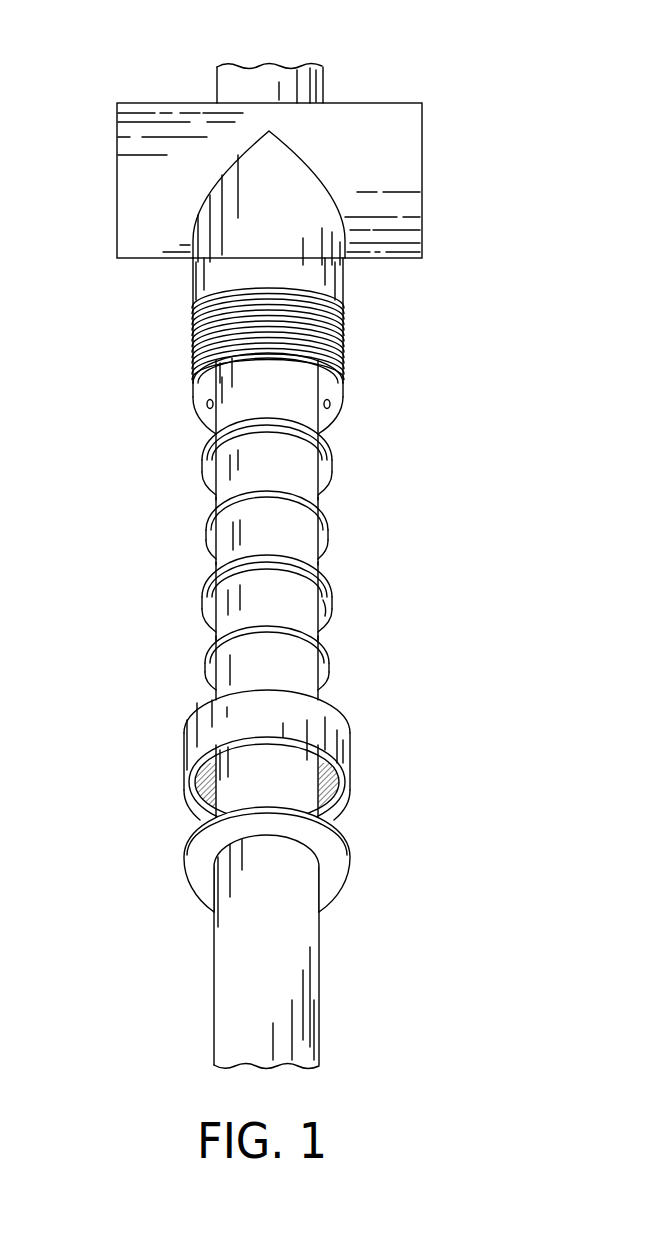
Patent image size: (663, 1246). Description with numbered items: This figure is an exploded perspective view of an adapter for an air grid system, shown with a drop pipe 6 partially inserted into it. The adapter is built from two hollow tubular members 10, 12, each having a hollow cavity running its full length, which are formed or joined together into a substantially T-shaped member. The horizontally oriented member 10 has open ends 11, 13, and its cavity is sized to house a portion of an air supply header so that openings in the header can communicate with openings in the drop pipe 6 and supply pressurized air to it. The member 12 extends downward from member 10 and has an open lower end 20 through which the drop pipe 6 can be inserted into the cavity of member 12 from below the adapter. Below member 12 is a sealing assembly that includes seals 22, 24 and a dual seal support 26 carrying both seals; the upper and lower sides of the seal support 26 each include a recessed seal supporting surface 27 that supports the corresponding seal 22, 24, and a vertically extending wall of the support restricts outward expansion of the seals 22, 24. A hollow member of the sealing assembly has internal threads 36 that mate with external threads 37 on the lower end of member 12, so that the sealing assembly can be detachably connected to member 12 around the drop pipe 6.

The drop pipe 6 is at (313, 72).
The hollow tubular member 10 is at (397, 115).
The open end 11 is at (130, 172).
The hollow tubular member 12 is at (357, 293).
The open end 13 is at (412, 190).
The open lower end 20 is at (327, 409).
The seal 22 is at (207, 532).
The seal 24 is at (212, 678).
The dual seal support 26 is at (212, 575).
The recessed seal supporting surface 27 is at (327, 620).
The internal threads 36 is at (203, 815).
The external threads 37 is at (353, 362).